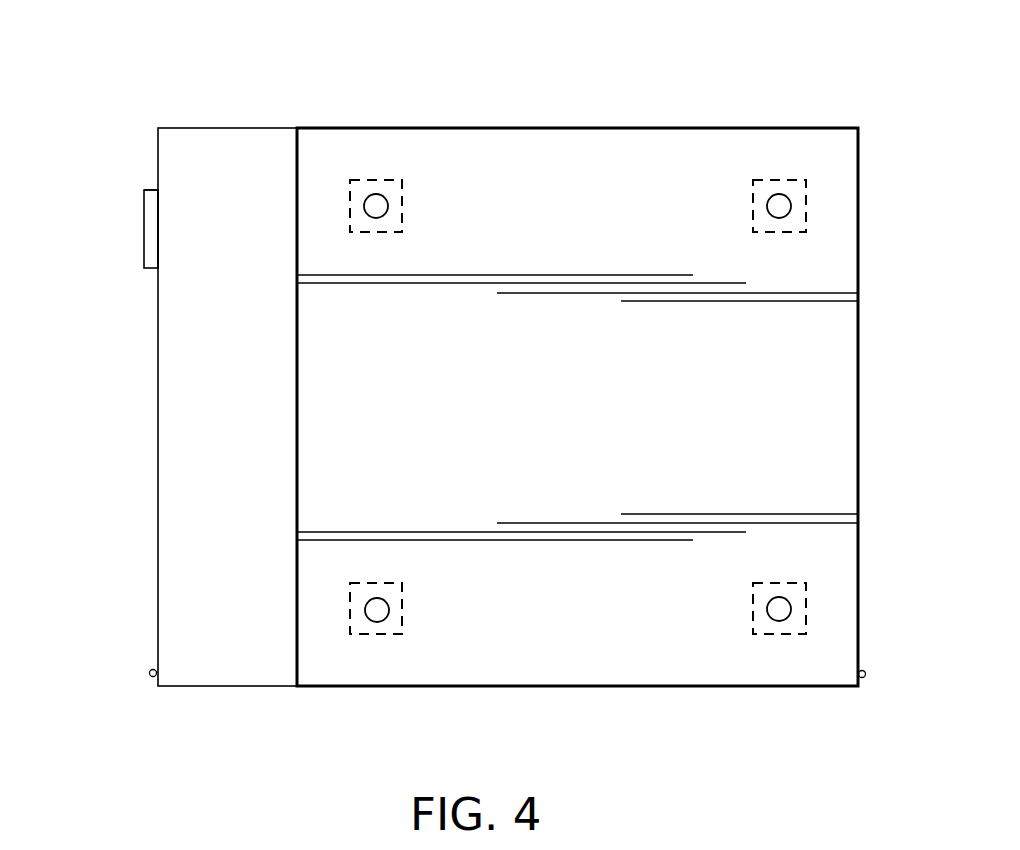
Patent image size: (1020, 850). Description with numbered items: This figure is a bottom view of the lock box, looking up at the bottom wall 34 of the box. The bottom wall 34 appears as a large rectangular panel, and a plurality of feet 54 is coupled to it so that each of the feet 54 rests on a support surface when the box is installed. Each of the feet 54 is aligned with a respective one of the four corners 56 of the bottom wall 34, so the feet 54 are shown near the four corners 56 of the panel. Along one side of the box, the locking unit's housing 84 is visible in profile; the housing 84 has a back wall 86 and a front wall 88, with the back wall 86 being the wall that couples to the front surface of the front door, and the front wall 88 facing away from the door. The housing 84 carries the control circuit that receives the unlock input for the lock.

The bottom wall 34 is at (586, 178).
The feet 54 is at (377, 194).
The corners 56 is at (297, 128).
The housing 84 is at (144, 190).
The back wall 86 is at (158, 202).
The front wall 88 is at (145, 228).